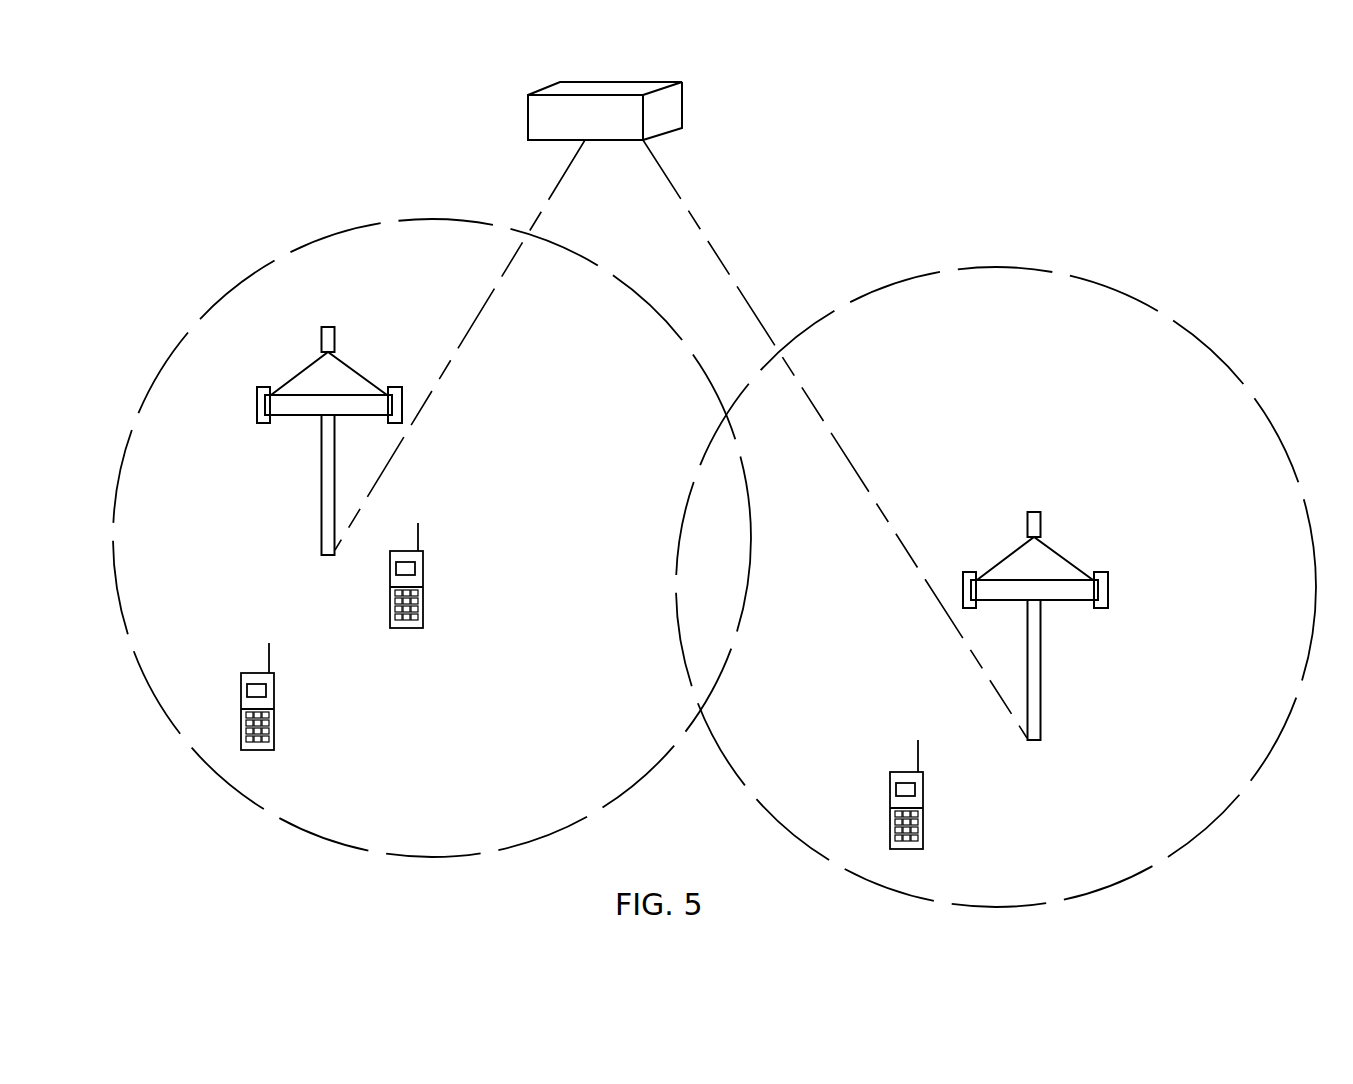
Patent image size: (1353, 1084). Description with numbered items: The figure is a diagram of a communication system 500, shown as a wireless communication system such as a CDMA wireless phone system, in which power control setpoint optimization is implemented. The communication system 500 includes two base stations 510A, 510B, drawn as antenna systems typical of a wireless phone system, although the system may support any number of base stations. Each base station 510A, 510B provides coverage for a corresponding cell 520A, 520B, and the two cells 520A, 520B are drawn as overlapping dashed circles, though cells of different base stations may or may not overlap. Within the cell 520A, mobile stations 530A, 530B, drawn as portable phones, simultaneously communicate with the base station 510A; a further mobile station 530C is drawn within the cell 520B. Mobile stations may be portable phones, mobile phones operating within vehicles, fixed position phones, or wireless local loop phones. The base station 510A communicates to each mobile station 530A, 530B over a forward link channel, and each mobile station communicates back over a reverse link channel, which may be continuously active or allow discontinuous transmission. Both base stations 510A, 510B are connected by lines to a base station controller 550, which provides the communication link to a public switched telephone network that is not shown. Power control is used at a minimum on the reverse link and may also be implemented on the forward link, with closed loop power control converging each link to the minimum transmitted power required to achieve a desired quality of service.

The communication system 500 is at (985, 175).
The base station 510A is at (263, 424).
The base station 510B is at (1100, 608).
The cell 520A is at (340, 232).
The cell 520B is at (1090, 283).
The mobile station 530A is at (257, 750).
The mobile station 530B is at (405, 628).
The mobile station 530C is at (905, 849).
The base station controller 550 is at (665, 132).